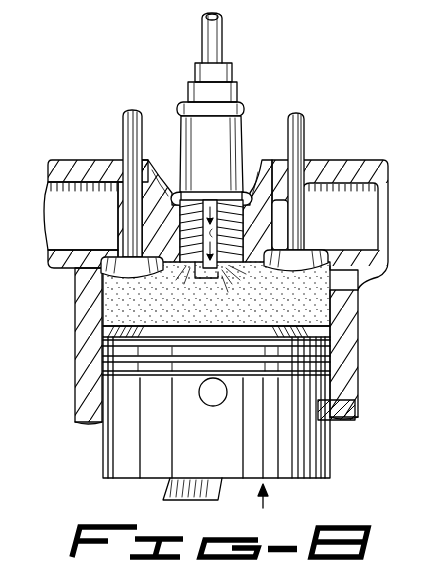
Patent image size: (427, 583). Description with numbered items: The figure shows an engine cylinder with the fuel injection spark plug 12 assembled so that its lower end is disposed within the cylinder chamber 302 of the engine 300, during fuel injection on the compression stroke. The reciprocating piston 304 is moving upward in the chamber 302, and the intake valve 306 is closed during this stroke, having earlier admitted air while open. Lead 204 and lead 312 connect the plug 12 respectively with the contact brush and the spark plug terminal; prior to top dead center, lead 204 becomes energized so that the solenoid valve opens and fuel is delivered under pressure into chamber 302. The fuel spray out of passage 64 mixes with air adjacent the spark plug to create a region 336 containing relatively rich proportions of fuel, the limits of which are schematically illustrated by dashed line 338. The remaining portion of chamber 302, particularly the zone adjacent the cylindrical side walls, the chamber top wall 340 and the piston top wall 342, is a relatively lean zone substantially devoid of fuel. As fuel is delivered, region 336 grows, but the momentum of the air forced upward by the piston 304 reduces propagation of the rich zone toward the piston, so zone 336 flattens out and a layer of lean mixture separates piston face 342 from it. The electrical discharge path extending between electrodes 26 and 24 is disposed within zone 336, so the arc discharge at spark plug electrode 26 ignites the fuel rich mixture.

The fuel injection spark plug 12 is at (232, 152).
The lead 204 is at (228, 78).
The lead 312 is at (245, 110).
The engine 300 is at (355, 160).
The electrode 24 is at (204, 199).
The passage 64 is at (219, 227).
The spark plug electrode 26 is at (188, 282).
The intake valve 306 is at (120, 235).
The chamber top wall 340 is at (98, 272).
The region 336 is at (220, 273).
The dashed line 338 is at (250, 292).
The cylinder chamber 302 is at (252, 406).
The reciprocating piston 304 is at (287, 405).
The piston top wall 342 is at (162, 323).